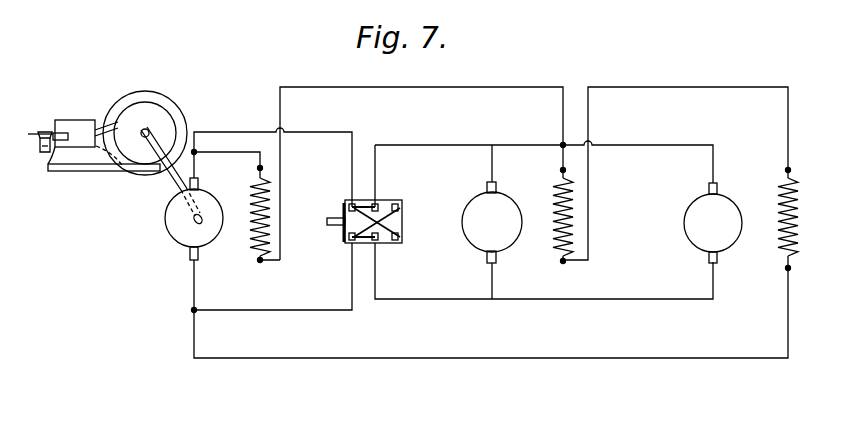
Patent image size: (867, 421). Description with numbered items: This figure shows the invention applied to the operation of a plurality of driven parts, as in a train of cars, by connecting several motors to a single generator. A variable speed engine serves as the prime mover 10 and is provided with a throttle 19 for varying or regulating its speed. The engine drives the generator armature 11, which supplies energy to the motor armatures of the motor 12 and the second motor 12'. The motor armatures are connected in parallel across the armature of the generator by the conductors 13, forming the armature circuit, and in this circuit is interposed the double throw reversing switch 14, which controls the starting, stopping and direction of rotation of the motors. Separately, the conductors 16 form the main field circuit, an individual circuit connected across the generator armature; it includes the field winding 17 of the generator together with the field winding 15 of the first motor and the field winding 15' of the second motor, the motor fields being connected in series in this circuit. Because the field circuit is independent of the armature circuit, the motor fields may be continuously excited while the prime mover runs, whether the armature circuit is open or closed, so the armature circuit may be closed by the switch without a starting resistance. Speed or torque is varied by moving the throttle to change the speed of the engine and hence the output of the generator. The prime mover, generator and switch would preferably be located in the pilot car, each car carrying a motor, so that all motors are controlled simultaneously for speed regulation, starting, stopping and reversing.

The prime mover 10 is at (78, 128).
The throttle 19 is at (42, 155).
The generator armature 11 is at (176, 221).
The conductors 13 is at (332, 132).
The conductors 16 is at (490, 87).
The field winding of the generator 17 is at (258, 248).
The switch 14 is at (333, 223).
The motor armature 12 is at (467, 227).
The field winding of the motor 15 is at (547, 233).
The motor 12' is at (683, 223).
The field winding of the motor 15' is at (770, 237).